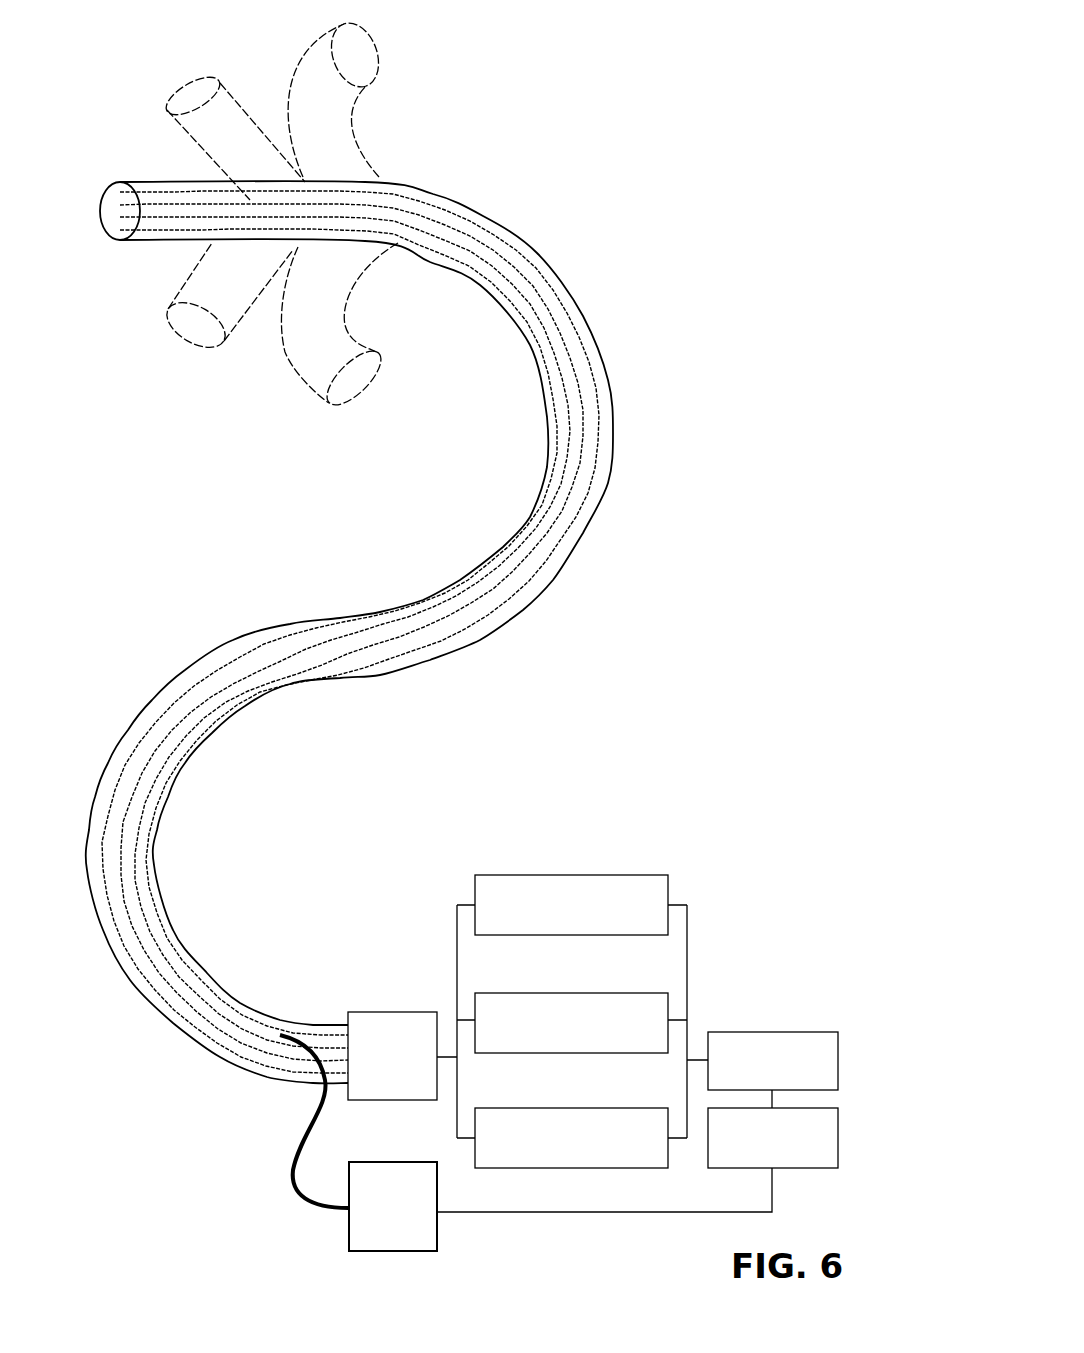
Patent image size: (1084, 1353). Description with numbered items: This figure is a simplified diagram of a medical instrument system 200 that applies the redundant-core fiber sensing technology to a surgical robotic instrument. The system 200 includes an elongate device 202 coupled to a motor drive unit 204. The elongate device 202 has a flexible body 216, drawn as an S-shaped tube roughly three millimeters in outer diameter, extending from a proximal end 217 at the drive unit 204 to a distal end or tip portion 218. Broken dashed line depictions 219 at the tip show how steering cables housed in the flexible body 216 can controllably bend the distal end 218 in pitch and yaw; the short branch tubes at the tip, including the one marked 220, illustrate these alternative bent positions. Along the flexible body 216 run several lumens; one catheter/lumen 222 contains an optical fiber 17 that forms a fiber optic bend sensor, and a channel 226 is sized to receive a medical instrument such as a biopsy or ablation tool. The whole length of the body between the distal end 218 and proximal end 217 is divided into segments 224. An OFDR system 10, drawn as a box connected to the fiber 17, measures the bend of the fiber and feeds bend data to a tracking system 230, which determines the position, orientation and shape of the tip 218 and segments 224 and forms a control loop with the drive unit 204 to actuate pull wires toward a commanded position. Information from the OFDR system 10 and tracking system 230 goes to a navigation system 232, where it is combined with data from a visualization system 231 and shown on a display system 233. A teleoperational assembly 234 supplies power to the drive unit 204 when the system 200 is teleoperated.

The medical instrument system 200 is at (511, 180).
The elongate device 202 is at (606, 362).
The motor drive unit 204 is at (413, 1073).
The flexible body 216 is at (281, 626).
The proximal end 217 is at (222, 973).
The distal end or tip portion 218 is at (128, 168).
The broken dashed line depictions of distal end 219 is at (187, 77).
The anatomical passageway 220 is at (163, 241).
The catheter/lumen 222 is at (614, 416).
The segments 224 is at (571, 563).
The channel 226 is at (540, 445).
The tracking system 230 is at (574, 1107).
The visualization system 231 is at (574, 992).
The navigation system 232 is at (838, 1073).
The display system 233 is at (838, 1137).
The teleoperational assembly 234 is at (574, 873).
The optical fiber 17 is at (293, 1194).
The OFDR system 10 is at (427, 1251).